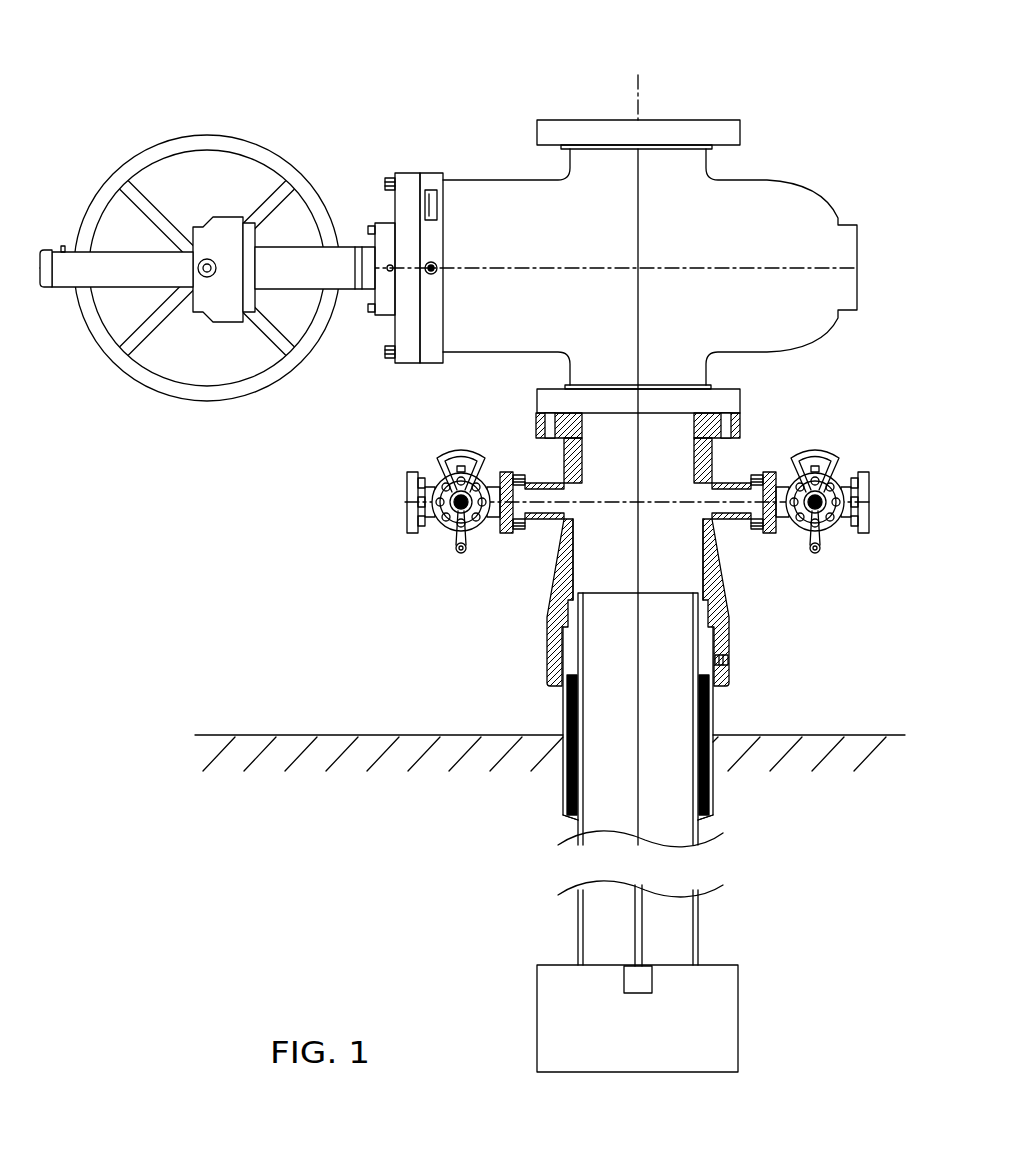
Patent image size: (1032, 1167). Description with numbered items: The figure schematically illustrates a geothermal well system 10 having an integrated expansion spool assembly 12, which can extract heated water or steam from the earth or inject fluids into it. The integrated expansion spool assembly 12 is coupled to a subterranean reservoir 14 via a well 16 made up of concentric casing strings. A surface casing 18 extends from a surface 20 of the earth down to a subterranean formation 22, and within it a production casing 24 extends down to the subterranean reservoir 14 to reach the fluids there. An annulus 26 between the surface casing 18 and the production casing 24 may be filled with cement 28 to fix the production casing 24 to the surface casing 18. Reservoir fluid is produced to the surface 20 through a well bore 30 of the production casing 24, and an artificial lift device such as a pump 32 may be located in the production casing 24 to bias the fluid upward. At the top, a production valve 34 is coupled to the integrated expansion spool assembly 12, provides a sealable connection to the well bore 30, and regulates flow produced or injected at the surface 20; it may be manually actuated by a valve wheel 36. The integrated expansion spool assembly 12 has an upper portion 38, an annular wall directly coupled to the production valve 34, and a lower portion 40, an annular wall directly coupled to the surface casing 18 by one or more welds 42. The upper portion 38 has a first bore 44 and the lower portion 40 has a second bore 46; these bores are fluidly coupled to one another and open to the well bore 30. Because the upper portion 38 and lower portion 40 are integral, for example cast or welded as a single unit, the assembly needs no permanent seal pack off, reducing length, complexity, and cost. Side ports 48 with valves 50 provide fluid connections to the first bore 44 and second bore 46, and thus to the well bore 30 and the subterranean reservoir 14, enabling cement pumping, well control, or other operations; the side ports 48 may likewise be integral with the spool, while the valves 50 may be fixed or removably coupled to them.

The geothermal well system 10 is at (351, 31).
The integrated expansion spool assembly 12 is at (713, 605).
The subterranean reservoir 14 is at (740, 1020).
The well 16 is at (749, 721).
The surface casing 18 is at (563, 718).
The surface 20 is at (298, 735).
The subterranean formation 22 is at (341, 876).
The production casing 24 is at (705, 832).
The annulus 26 is at (705, 648).
The cement 28 is at (712, 713).
The well bore 30 is at (605, 788).
The pump 32 is at (652, 980).
The production valve 34 is at (787, 202).
The valve wheel 36 is at (288, 188).
The upper portion 38 is at (762, 438).
The lower portion 40 is at (548, 605).
The welds 42 is at (560, 698).
The first bore 44 is at (620, 442).
The second bore 46 is at (612, 587).
The side ports 48 is at (553, 483).
The valves 50 is at (458, 494).